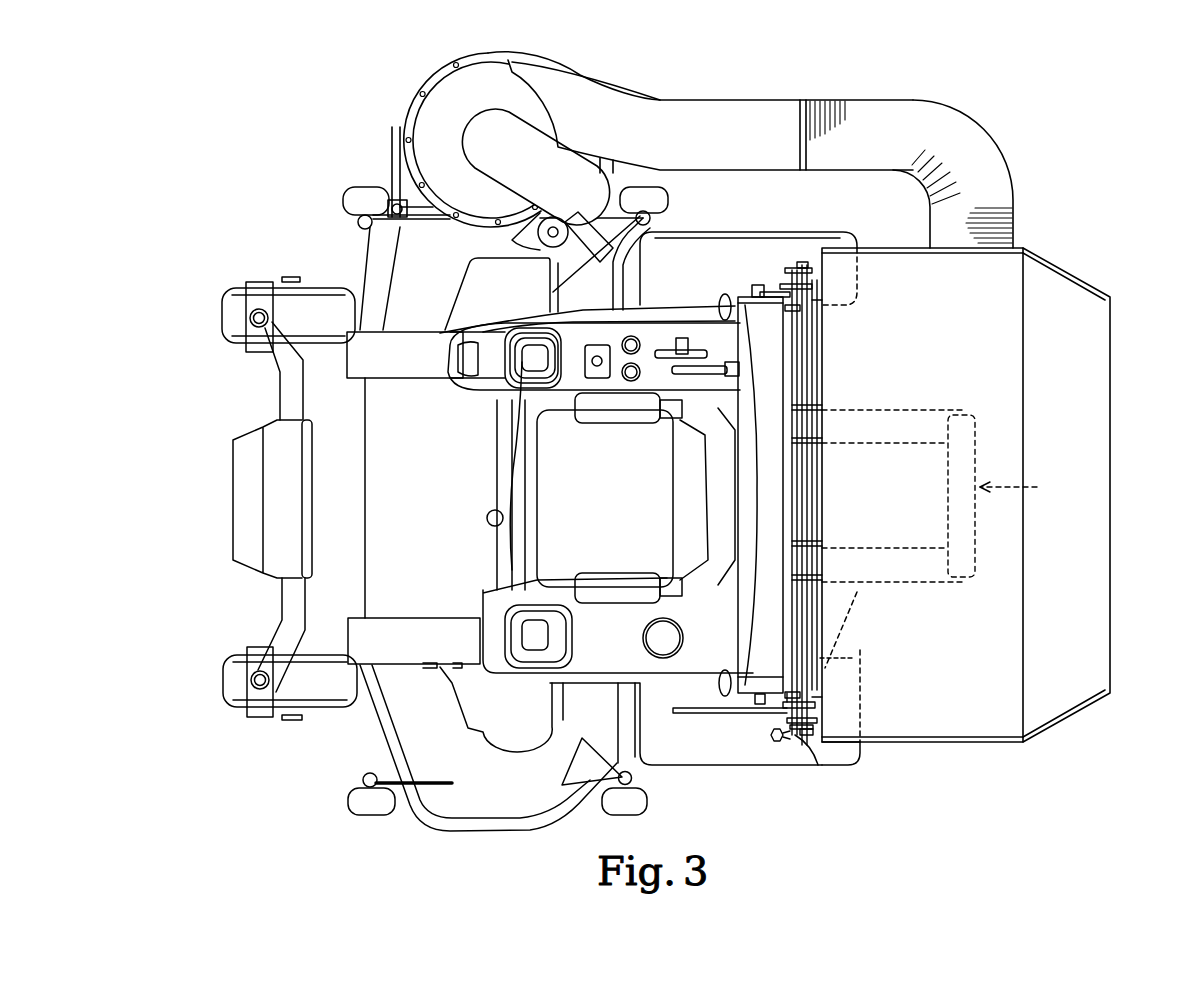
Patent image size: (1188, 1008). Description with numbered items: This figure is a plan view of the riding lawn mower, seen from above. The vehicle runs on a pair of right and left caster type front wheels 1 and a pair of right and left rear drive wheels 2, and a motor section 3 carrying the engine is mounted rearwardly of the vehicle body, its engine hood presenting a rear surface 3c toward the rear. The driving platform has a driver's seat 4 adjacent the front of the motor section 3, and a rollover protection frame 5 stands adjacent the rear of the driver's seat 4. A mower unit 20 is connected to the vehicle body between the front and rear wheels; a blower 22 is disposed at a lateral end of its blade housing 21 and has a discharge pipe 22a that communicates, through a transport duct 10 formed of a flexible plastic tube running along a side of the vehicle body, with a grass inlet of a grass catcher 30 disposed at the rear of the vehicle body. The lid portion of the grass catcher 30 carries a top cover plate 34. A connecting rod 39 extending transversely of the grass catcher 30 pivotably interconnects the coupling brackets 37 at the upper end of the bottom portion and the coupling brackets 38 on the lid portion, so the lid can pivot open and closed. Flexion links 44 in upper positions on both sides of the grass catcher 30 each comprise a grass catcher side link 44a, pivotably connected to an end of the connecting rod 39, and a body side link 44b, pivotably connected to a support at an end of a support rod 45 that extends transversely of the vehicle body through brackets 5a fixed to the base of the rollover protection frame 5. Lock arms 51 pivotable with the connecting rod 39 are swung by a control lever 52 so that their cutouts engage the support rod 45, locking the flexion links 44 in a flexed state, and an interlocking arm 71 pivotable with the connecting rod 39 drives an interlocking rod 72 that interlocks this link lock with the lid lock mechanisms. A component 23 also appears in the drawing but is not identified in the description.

The front wheels 1 is at (232, 316).
The rear drive wheels 2 is at (700, 247).
The motor section 3 is at (935, 407).
The rear surface 3c is at (1024, 487).
The driver's seat 4 is at (540, 466).
The rollover protection frame 5 is at (762, 490).
The brackets 5a is at (812, 313).
The transport duct 10 is at (990, 140).
The mower unit 20 is at (372, 735).
The blade housing 21 is at (405, 287).
The blower 22 is at (413, 117).
The discharge pipe 22a is at (700, 120).
The lamp 23 is at (345, 199).
The grass catcher 30 is at (1115, 378).
The top cover plate 34 is at (1060, 285).
The coupling brackets 37 is at (815, 420).
The coupling brackets 38 is at (822, 297).
The connecting rod 39 is at (812, 470).
The flexion links 44 is at (799, 265).
The grass catcher side link 44a is at (783, 275).
The body side link 44b is at (810, 297).
The support rod 45 is at (805, 507).
The lock arms 51 is at (787, 287).
The control lever 52 is at (722, 713).
The interlocking arm 71 is at (781, 742).
The interlocking rod 72 is at (810, 737).